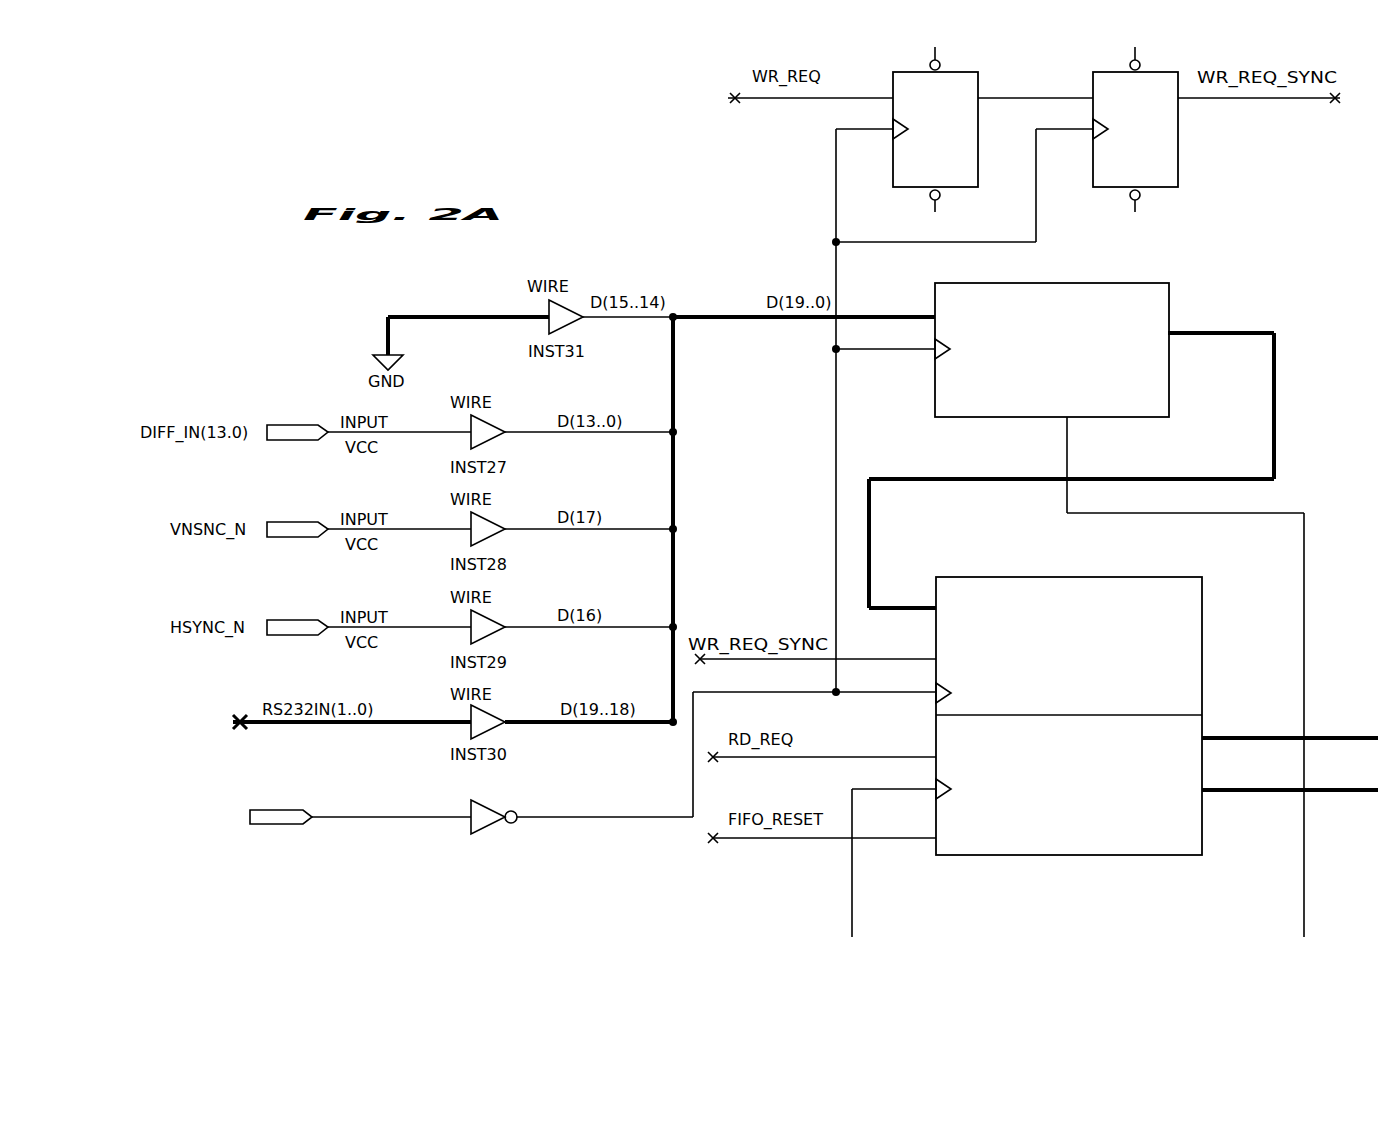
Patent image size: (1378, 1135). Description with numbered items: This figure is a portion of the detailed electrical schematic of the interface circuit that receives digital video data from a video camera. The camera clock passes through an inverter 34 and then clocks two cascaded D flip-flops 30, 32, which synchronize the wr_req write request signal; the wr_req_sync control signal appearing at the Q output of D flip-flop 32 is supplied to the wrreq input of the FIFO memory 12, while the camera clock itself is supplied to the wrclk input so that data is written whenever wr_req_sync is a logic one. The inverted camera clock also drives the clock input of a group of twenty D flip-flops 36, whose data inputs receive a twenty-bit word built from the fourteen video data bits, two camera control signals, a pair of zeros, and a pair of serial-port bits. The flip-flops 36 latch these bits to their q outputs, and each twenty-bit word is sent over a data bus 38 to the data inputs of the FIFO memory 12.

The FIFO memory 12 is at (1188, 577).
The D flip-flop 30 is at (968, 187).
The D flip-flop 32 is at (1173, 187).
The inverter 34 is at (467, 821).
The D flip-flops 36 is at (1110, 283).
The data bus 38 is at (1276, 373).